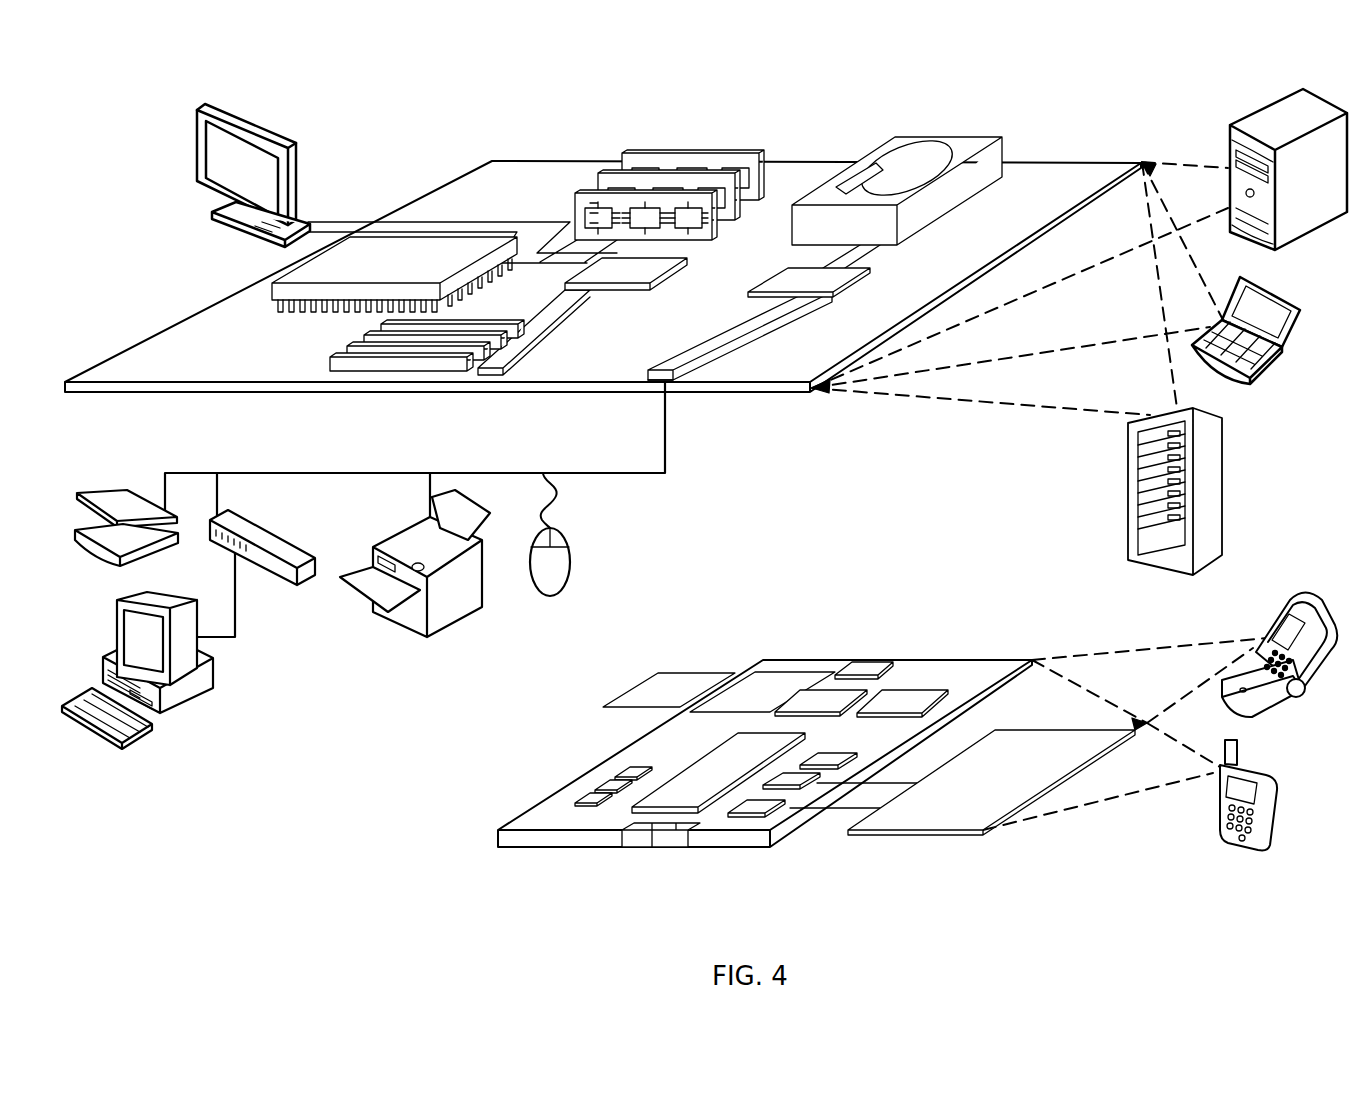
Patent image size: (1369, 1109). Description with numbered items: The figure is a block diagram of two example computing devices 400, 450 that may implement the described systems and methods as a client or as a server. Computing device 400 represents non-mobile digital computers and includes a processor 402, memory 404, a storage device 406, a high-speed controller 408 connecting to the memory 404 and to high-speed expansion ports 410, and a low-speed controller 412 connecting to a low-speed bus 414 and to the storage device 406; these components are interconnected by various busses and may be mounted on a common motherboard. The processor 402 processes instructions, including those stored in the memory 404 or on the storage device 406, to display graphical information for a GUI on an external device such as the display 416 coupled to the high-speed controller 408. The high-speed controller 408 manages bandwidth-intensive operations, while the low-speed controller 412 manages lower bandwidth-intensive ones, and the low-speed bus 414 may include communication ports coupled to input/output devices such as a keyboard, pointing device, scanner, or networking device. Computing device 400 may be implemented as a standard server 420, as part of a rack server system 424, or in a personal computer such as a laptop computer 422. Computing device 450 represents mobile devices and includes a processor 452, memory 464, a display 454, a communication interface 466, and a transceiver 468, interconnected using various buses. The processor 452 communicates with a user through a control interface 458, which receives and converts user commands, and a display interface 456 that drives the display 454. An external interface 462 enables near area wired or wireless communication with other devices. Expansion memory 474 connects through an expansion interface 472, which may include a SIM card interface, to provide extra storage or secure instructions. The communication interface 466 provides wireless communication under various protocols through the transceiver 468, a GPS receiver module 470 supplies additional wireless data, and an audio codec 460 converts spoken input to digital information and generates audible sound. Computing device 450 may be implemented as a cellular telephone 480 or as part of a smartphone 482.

The computing device 400 is at (100, 120).
The processor 402 is at (272, 290).
The memory 404 is at (626, 122).
The storage device 406 is at (890, 143).
The high-speed controller 408 is at (600, 272).
The high-speed expansion ports 410 is at (350, 352).
The low-speed controller 412 is at (780, 280).
The low-speed bus 414 is at (676, 382).
The display 416 is at (204, 104).
The standard server 420 is at (1230, 150).
The laptop computer 422 is at (1296, 310).
The rack server system 424 is at (1130, 520).
The computing device 450 is at (465, 848).
The processor 452 is at (690, 808).
The display 454 is at (960, 832).
The display interface 456 is at (768, 808).
The control interface 458 is at (786, 777).
The audio codec 460 is at (828, 760).
The external interface 462 is at (652, 832).
The memory 464 is at (586, 800).
The communication interface 466 is at (818, 700).
The transceiver 468 is at (904, 700).
The GPS receiver module 470 is at (866, 668).
The expansion interface 472 is at (718, 645).
The expansion memory 474 is at (660, 673).
The cellular telephone 480 is at (1282, 612).
The smartphone 482 is at (1222, 806).